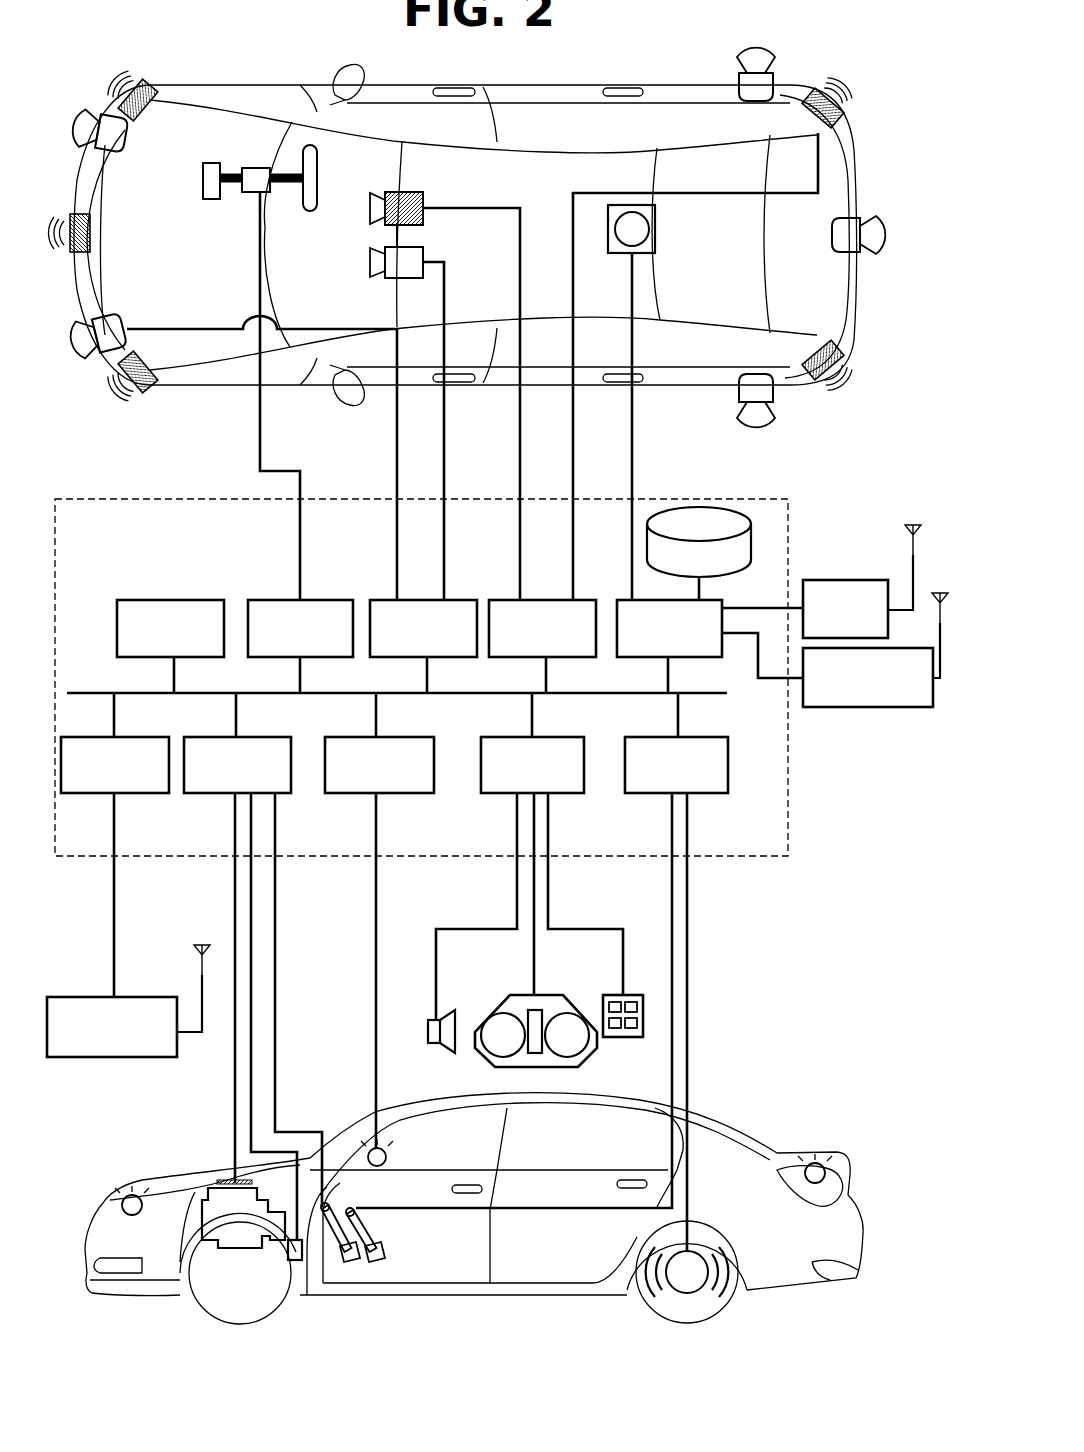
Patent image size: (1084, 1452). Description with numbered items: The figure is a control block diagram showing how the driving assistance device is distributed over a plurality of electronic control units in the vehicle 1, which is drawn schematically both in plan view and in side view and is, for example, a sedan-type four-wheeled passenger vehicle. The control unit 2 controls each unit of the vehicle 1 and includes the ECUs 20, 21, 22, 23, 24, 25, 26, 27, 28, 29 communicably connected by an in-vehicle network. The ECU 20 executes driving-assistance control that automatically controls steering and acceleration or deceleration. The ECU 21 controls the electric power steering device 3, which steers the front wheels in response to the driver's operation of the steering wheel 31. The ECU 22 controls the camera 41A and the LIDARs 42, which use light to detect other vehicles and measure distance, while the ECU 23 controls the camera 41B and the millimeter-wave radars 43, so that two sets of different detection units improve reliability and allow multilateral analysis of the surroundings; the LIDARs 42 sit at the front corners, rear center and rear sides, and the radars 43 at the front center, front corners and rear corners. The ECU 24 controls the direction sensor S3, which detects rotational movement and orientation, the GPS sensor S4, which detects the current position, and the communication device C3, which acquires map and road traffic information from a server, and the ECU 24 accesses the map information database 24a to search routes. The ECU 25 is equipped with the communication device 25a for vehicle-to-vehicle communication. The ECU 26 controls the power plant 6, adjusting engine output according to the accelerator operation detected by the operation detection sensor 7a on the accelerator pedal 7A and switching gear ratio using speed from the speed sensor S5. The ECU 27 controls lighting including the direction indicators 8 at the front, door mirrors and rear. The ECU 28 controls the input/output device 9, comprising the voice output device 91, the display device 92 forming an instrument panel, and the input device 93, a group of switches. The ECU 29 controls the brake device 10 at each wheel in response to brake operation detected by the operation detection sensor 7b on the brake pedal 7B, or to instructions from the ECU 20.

The vehicle 1 is at (872, 141).
The control unit 2 is at (788, 857).
The electric power steering device 3 is at (212, 200).
The steering wheel 31 is at (310, 212).
The camera 41A is at (390, 279).
The camera 41B is at (430, 222).
The LIDAR 42 is at (122, 157).
The radar 43 is at (146, 112).
The direction sensor S3 is at (658, 230).
The ECU 20 is at (200, 599).
The ECU 21 is at (332, 599).
The ECU 22 is at (424, 599).
The ECU 23 is at (547, 599).
The ECU 24 is at (615, 599).
The map information database 24a is at (694, 506).
The ECU 25 is at (143, 796).
The ECU 26 is at (215, 796).
The ECU 27 is at (408, 796).
The ECU 28 is at (569, 796).
The ECU 29 is at (709, 796).
The GPS sensor S4 is at (863, 580).
The communication device C3 is at (847, 709).
The communication device 25a is at (112, 1060).
The power plant 6 is at (206, 1188).
The speed sensor S5 is at (297, 1262).
The operation detection sensor 7a is at (367, 1190).
The accelerator pedal 7A is at (358, 1258).
The operation detection sensor 7b is at (393, 1220).
The brake pedal 7B is at (382, 1240).
The direction indicator 8 is at (120, 1203).
The input/output device 9 is at (525, 1040).
The voice output device 91 is at (428, 1026).
The display device 92 is at (494, 1008).
The input device 93 is at (620, 1038).
The brake device 10 is at (691, 1293).